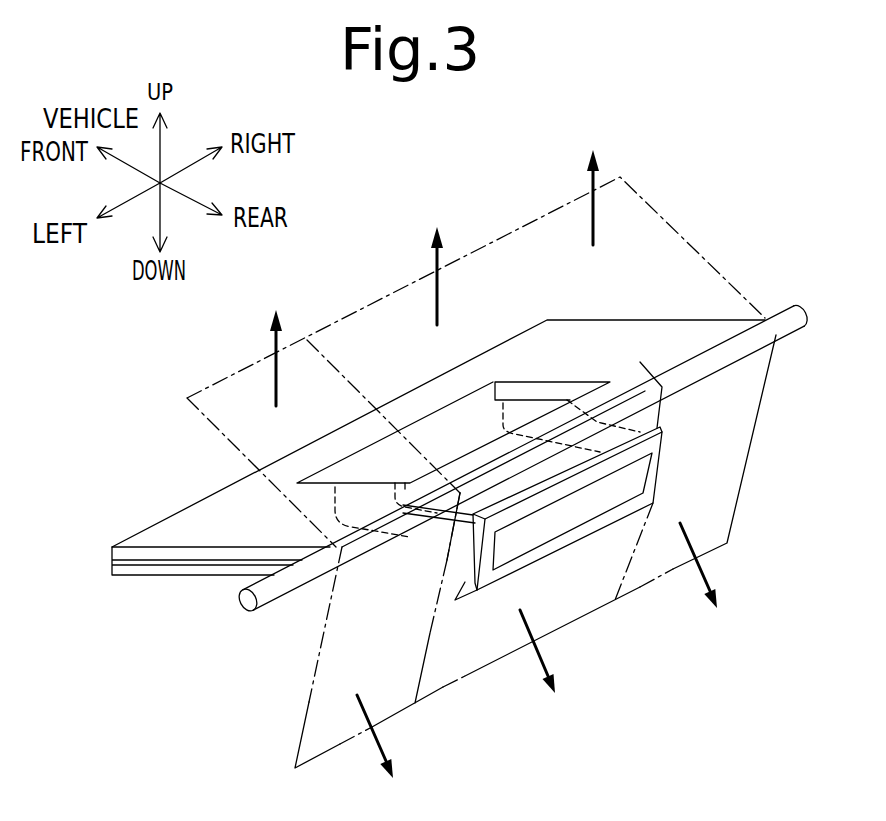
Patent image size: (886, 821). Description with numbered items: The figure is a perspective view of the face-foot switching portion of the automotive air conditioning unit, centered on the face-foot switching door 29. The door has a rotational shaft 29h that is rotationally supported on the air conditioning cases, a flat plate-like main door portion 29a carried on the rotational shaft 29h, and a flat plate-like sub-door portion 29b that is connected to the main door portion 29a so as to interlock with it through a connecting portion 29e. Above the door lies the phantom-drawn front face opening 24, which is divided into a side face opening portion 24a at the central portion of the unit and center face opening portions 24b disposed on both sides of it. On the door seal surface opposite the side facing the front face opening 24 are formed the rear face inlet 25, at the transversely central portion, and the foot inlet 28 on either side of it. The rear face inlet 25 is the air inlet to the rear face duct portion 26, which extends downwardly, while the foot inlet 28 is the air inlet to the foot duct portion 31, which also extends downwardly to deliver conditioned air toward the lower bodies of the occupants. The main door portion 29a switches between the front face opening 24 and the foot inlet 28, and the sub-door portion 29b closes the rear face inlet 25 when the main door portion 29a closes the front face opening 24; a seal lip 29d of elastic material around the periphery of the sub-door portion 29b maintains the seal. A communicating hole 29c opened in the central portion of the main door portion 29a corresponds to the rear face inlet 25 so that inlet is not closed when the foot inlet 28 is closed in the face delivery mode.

The front face opening 24 is at (476, 334).
The side face opening portion 24a is at (431, 263).
The center face opening portions 24b is at (429, 264).
The rear face inlet 25 is at (466, 590).
The rear face duct portion 26 is at (547, 670).
The foot inlet 28 is at (730, 484).
The face-foot switching door 29 is at (176, 506).
The main door portion 29a is at (268, 526).
The sub-door portion 29b is at (594, 531).
The communicating hole 29c is at (493, 453).
The seal lip 29d is at (557, 547).
The connecting portion 29e is at (440, 540).
The rotational shaft 29h is at (272, 601).
The foot duct portion 31 is at (546, 669).